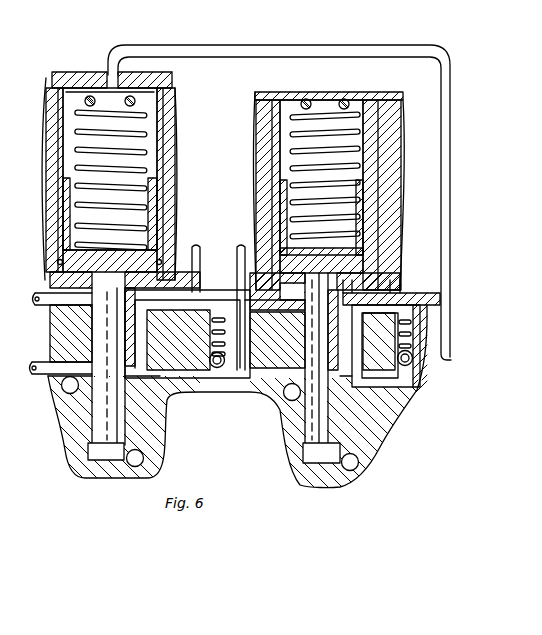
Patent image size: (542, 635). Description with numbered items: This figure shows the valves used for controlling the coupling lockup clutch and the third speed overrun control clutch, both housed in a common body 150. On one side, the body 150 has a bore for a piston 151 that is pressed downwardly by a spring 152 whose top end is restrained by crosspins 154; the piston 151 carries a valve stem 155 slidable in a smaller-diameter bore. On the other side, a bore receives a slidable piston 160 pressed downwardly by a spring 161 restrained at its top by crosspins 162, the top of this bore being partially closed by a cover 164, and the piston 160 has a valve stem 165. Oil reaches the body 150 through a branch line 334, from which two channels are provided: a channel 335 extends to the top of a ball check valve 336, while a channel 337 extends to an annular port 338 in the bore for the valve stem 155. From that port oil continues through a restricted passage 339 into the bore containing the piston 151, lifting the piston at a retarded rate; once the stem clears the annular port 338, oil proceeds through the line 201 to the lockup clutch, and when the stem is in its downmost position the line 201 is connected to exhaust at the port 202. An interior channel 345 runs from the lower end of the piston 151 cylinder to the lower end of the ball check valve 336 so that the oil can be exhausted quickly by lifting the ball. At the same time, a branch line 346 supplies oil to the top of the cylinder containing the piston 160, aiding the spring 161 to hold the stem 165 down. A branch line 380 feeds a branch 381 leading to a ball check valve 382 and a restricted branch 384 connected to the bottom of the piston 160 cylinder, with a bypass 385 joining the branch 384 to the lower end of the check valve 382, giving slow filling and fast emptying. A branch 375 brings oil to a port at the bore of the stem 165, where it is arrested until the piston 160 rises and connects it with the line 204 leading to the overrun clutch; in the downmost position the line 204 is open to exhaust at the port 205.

The branch line 346 is at (284, 48).
The cover 164 is at (56, 78).
The crosspins 162 is at (90, 96).
The spring 161 is at (148, 113).
The piston 160 is at (175, 210).
The branch line 375 is at (55, 306).
The line 204 is at (46, 376).
The exhaust port 205 is at (66, 400).
The valve stem 165 is at (92, 470).
The branch line 380 is at (262, 230).
The restricted branch 384 is at (195, 246).
The line 201 is at (238, 250).
The branch 381 is at (187, 334).
The bypass 385 is at (170, 393).
The ball check valve 382 is at (219, 372).
The exhaust port 202 is at (286, 402).
The spring 152 is at (290, 133).
The crosspins 154 is at (342, 99).
The body 150 is at (398, 110).
The piston 151 is at (388, 222).
The valve stem 155 is at (351, 358).
The restricted passage 339 is at (277, 340).
The annular port 338 is at (275, 327).
The interior channel 345 is at (364, 367).
The channel 337 is at (392, 290).
The channel 335 is at (400, 290).
The branch line 334 is at (412, 390).
The ball check valve 336 is at (415, 395).